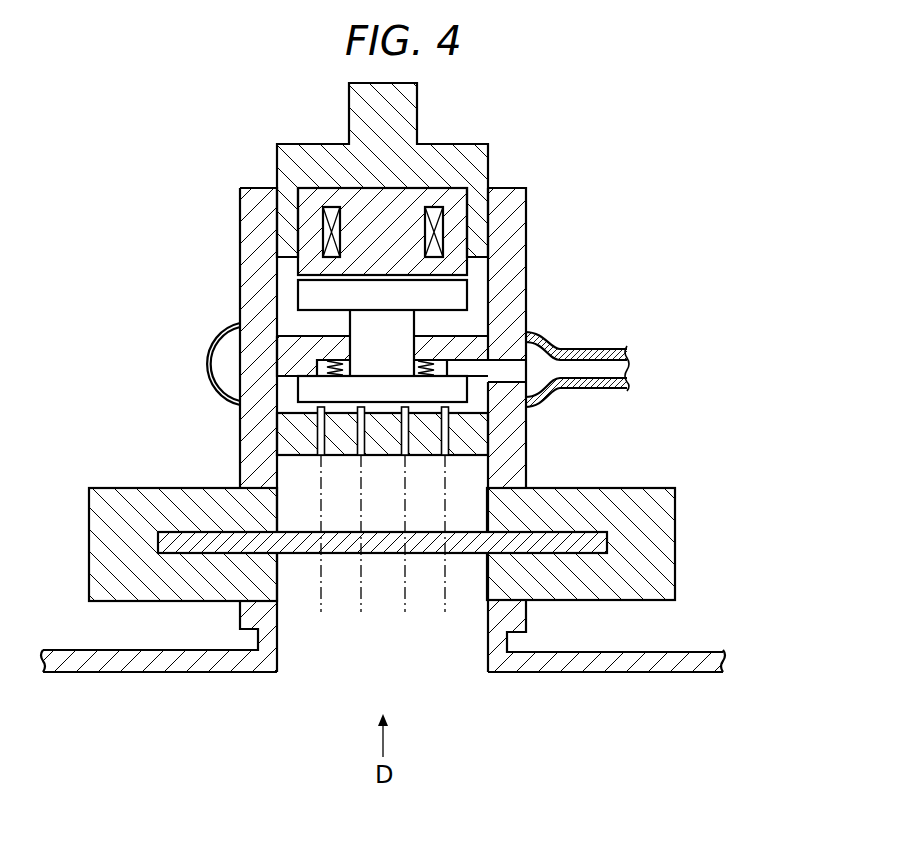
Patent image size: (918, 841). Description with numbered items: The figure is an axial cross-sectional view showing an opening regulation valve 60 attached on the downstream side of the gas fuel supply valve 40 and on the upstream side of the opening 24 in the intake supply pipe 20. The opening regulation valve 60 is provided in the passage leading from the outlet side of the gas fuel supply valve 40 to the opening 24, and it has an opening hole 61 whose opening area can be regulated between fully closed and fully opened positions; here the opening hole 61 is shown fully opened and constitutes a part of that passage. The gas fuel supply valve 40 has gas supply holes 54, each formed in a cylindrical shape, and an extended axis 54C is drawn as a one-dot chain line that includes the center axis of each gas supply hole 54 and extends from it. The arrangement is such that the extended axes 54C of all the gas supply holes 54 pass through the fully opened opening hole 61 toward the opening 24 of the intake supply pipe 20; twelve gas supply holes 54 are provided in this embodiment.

The gas fuel supply valve 40 is at (500, 128).
The gas supply hole 54 is at (319, 458).
The extended axis 54C is at (447, 482).
The opening regulation valve 60 is at (676, 480).
The opening hole 61 is at (443, 552).
The intake supply pipe 20 is at (698, 658).
The opening 24 is at (303, 672).